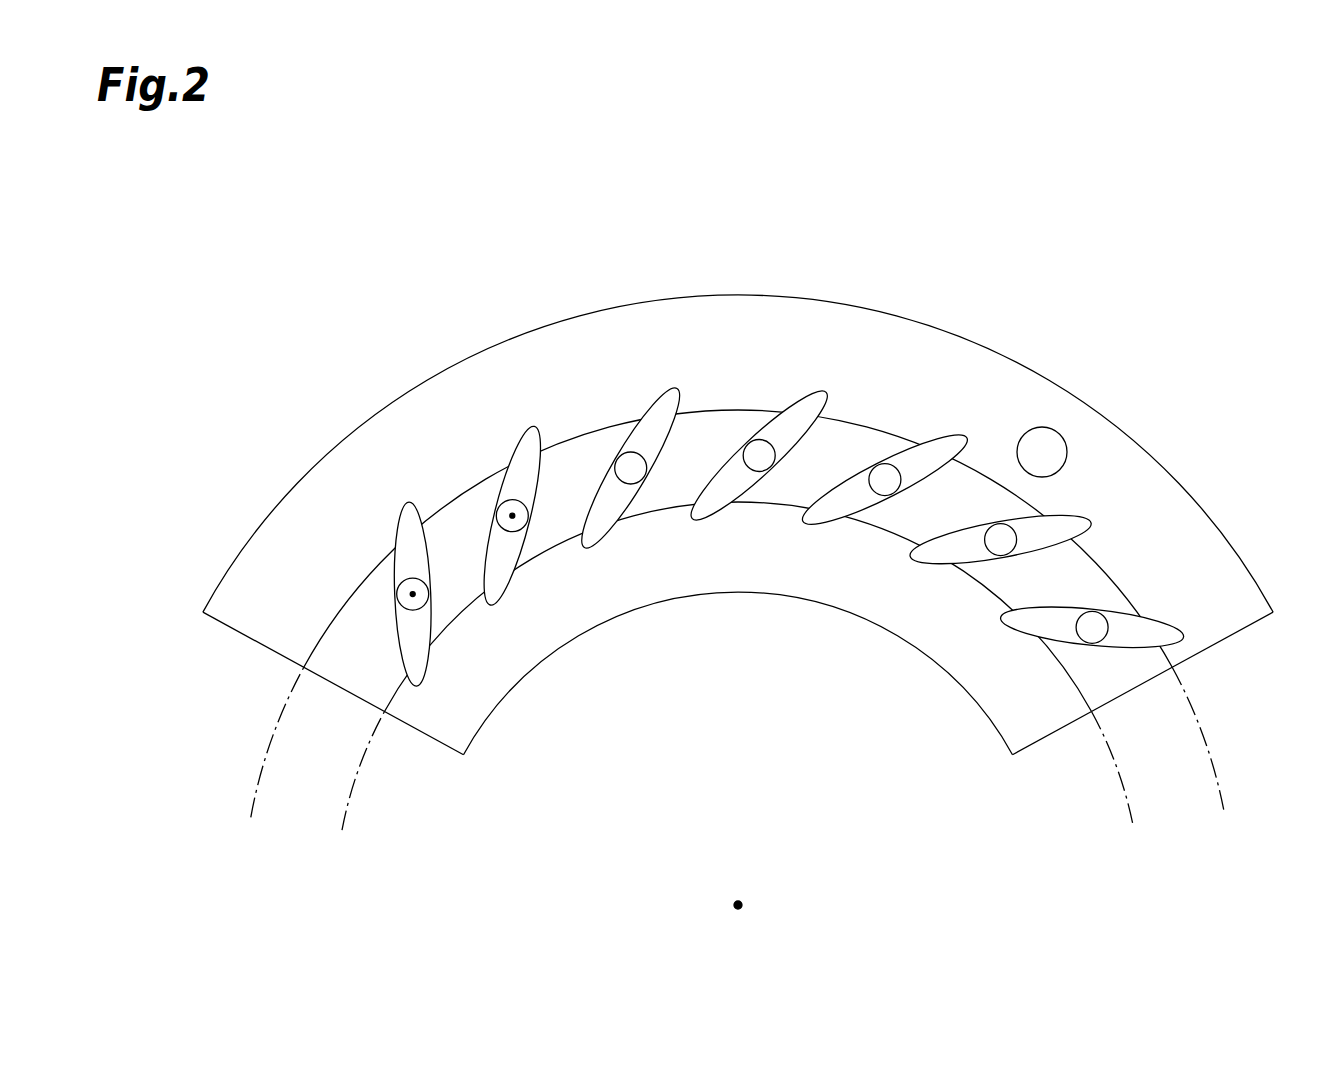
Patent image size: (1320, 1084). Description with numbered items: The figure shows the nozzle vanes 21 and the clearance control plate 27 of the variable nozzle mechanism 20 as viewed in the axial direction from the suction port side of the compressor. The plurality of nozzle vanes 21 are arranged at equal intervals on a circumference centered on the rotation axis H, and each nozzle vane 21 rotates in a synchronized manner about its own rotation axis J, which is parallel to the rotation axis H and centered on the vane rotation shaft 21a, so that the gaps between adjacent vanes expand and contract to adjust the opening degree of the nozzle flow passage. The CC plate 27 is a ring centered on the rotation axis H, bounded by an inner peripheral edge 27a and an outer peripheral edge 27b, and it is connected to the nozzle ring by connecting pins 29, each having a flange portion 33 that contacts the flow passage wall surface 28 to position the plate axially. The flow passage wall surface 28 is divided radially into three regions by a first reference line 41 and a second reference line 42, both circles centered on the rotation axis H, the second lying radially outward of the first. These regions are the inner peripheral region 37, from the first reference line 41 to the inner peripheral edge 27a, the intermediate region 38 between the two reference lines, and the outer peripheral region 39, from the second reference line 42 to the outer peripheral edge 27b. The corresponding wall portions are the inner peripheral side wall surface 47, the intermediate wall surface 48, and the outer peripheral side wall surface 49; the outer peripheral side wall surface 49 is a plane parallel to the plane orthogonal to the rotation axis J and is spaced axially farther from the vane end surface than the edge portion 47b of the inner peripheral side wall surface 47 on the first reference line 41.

The variable nozzle mechanism 20 is at (1093, 243).
The nozzle vane 21 is at (411, 540).
The vane rotation shaft 21a is at (424, 608).
The rotation axis J is at (403, 594).
The clearance control plate 27 is at (1179, 475).
The inner peripheral edge 27a is at (970, 697).
The outer peripheral edge 27b is at (1230, 541).
The flow passage wall surface 28 is at (788, 518).
The connecting pin 29 is at (1087, 405).
The flange portion 33 is at (1050, 440).
The inner peripheral region 37 is at (1048, 746).
The intermediate region 38 is at (1132, 694).
The outer peripheral region 39 is at (1210, 652).
The first reference line 41 is at (1136, 828).
The second reference line 42 is at (1221, 810).
The inner peripheral side wall surface 47 is at (525, 629).
The edge portion 47b is at (863, 520).
The intermediate wall surface 48 is at (672, 490).
The outer peripheral side wall surface 49 is at (777, 338).
The rotation axis H is at (738, 905).